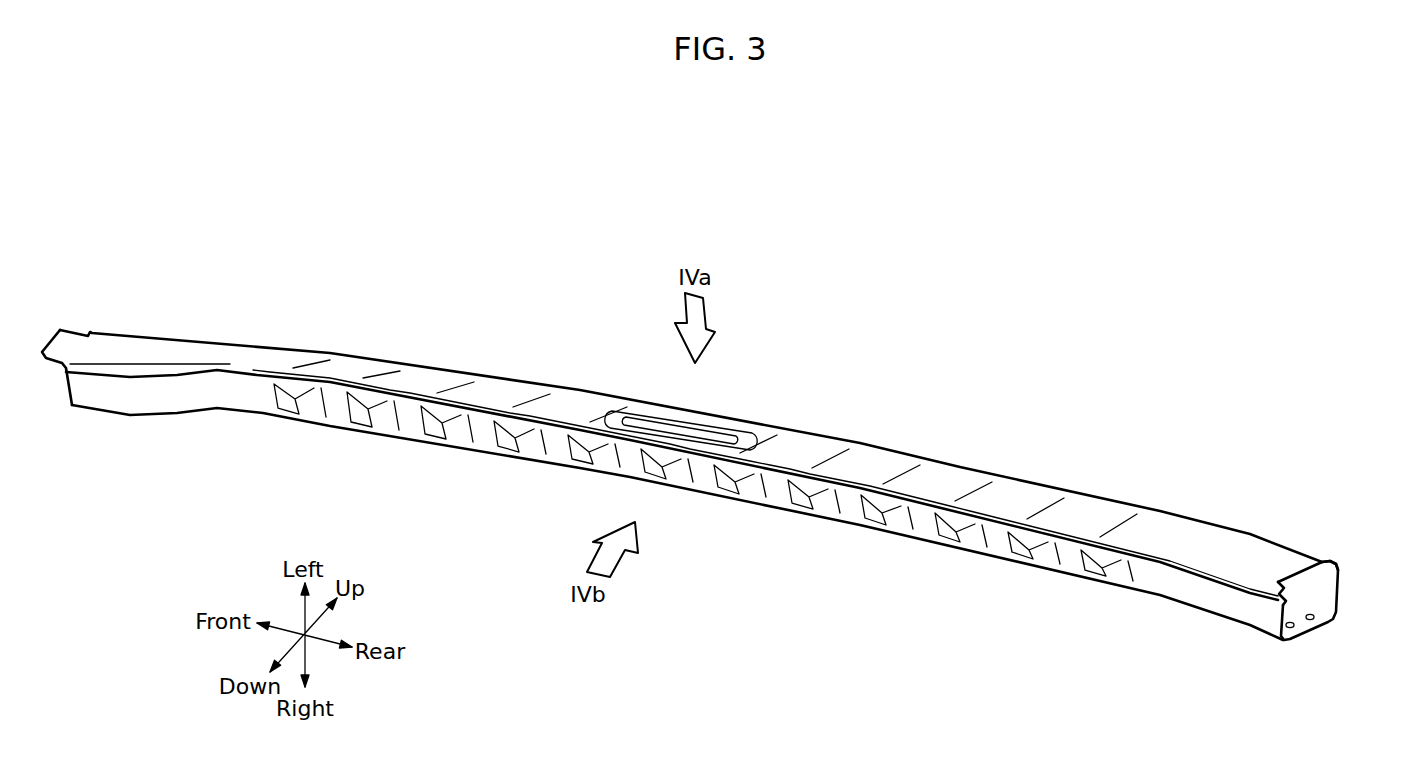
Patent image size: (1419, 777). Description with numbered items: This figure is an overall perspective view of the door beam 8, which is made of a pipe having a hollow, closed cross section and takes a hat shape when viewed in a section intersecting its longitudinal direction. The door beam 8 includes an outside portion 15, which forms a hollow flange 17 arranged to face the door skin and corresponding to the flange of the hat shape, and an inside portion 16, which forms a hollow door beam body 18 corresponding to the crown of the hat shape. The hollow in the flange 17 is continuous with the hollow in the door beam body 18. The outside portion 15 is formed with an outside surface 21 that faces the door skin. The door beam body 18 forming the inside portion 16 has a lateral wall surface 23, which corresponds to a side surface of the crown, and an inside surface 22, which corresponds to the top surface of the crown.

The door beam 8 is at (727, 503).
The outside portion 15 is at (1185, 538).
The inside portion 16 is at (1338, 590).
The flange 17 is at (1267, 602).
The door beam body 18 is at (1192, 588).
The outside surface 21 is at (793, 450).
The inside surface 22 is at (1313, 633).
The lateral wall surface 23 is at (777, 493).